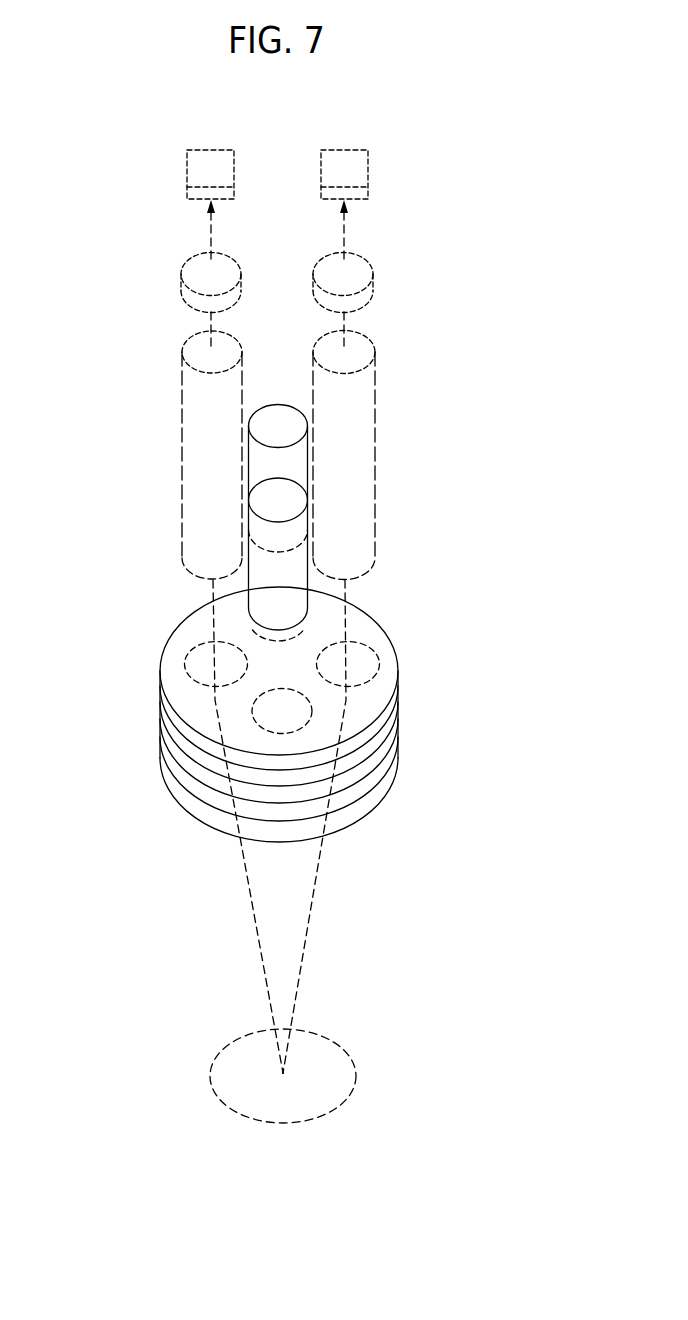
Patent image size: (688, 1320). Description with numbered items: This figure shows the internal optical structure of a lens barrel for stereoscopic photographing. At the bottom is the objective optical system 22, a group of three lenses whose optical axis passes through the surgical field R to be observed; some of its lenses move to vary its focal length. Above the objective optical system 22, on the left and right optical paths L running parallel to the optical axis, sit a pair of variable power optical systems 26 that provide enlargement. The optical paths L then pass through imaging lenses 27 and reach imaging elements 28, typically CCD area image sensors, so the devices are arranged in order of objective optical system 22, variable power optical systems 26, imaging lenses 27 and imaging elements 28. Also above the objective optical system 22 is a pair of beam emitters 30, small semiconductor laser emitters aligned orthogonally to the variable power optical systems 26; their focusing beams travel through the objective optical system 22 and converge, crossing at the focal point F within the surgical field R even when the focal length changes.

The objective optical system 22 is at (123, 660).
The variable power optical systems 26 is at (182, 384).
The imaging lenses 27 is at (182, 269).
The imaging elements 28 is at (187, 160).
The beam emitters 30 is at (280, 425).
The optical paths L is at (213, 622).
The surgical field R is at (227, 1050).
The focal point F is at (283, 1073).